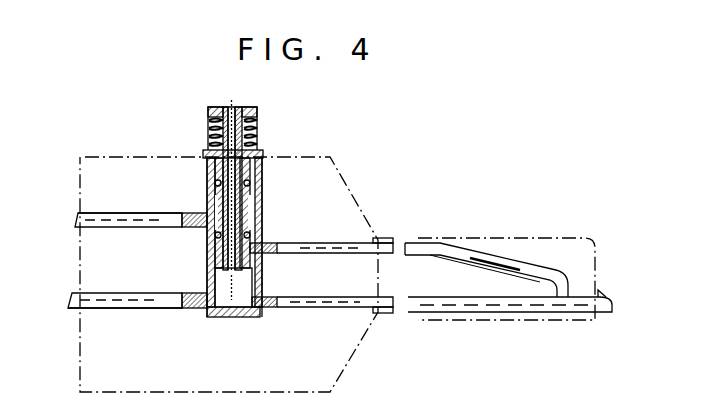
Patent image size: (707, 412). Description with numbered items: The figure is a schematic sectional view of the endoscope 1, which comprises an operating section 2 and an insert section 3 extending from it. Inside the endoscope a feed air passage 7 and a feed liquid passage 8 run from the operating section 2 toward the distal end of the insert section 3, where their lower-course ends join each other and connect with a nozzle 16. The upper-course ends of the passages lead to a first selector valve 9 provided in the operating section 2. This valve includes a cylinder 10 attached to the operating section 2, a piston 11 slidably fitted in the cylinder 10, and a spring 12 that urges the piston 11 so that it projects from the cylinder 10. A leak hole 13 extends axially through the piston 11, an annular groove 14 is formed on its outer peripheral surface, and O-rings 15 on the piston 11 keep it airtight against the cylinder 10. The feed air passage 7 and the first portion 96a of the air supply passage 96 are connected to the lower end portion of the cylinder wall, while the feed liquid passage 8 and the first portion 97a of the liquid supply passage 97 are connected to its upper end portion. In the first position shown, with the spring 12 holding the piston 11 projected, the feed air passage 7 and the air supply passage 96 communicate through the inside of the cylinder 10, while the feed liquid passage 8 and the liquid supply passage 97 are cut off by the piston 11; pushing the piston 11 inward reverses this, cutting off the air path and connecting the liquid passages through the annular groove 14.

The endoscope 1 is at (525, 232).
The operating section 2 is at (354, 176).
The insert section 3 is at (555, 238).
The feed air passage 7 is at (319, 308).
The feed liquid passage 8 is at (320, 244).
The first selector valve 9 is at (268, 184).
The cylinder 10 is at (216, 290).
The piston 11 is at (250, 106).
The spring 12 is at (208, 128).
The leak hole 13 is at (231, 107).
The annular groove 14 is at (246, 214).
The O-rings 15 is at (213, 183).
The nozzle 16 is at (606, 298).
The air supply passage 96 is at (95, 310).
The first portion of the air supply passage 96a is at (140, 308).
The liquid supply passage 97 is at (104, 212).
The first portion of the liquid supply passage 97a is at (132, 214).